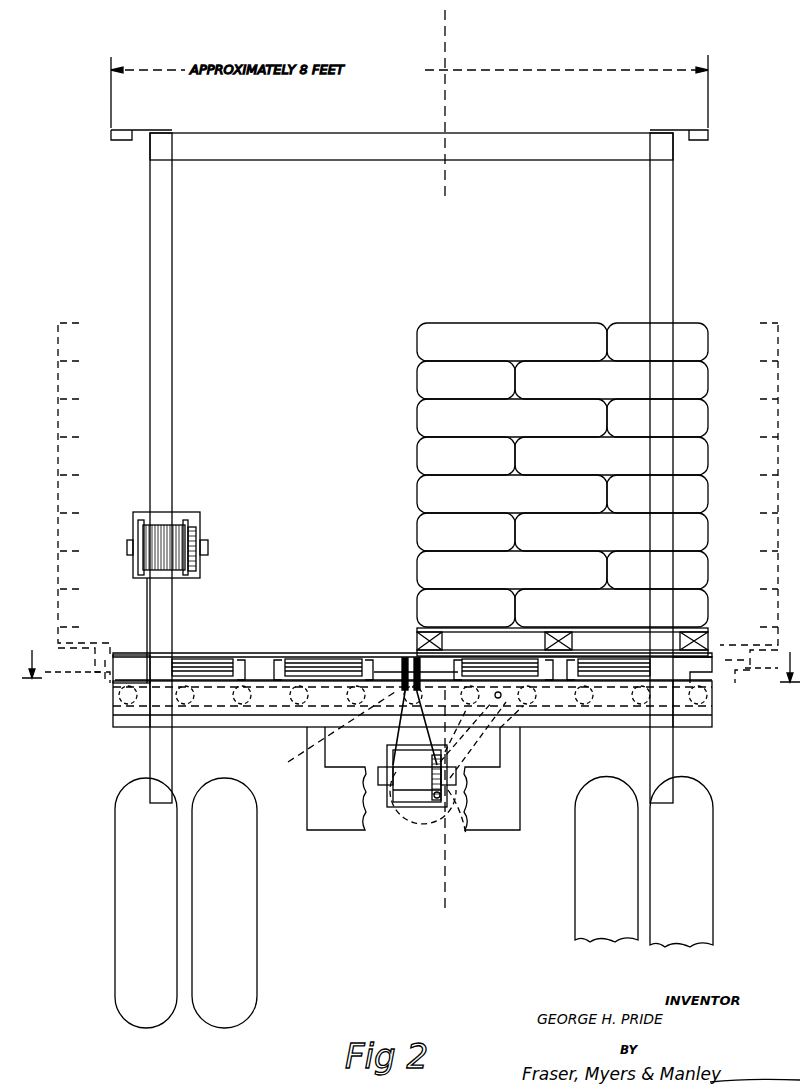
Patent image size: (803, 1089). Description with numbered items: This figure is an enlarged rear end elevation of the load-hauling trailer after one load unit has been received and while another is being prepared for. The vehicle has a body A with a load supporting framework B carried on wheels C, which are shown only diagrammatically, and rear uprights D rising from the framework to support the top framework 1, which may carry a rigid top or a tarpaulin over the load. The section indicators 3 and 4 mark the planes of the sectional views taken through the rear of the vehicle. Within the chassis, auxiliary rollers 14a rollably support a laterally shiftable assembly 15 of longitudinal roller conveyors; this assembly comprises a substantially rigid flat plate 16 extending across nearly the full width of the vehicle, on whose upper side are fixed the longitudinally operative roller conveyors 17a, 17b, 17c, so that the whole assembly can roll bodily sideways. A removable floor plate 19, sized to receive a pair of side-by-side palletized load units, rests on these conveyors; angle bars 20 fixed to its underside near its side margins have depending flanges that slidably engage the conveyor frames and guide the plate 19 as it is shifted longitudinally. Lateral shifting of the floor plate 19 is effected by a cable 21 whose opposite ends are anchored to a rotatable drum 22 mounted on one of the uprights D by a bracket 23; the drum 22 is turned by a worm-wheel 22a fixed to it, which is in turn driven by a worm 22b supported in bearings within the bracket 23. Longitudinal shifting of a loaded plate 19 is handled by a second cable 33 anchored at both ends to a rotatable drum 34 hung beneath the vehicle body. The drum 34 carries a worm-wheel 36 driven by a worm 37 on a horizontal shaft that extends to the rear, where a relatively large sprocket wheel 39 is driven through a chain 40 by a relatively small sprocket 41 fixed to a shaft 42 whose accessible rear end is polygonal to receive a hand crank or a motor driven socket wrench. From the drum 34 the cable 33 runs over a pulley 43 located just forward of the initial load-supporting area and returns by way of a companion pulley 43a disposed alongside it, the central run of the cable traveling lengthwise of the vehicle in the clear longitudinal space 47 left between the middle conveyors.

The top framework 1 is at (338, 137).
The section line 3- 3 is at (447, 905).
The section line 4- 4 is at (411, 657).
The auxiliary rollers 14a is at (243, 702).
The laterally shiftable assembly of longitudinal roller conveyors 15 is at (416, 672).
The flat plate 16 is at (265, 700).
The longitudinally operative roller conveyor 17a is at (200, 668).
The longitudinally operative roller conveyor 17b is at (505, 668).
The longitudinally operative roller conveyor 17c is at (302, 668).
The floor plate 19 is at (372, 672).
The angle bars 20 is at (140, 660).
The cable 21 is at (148, 590).
The rotatable drum 22 is at (150, 545).
The worm-wheel 22a is at (194, 540).
The worm 22b is at (196, 572).
The bracket 23 is at (145, 520).
The cable 33 is at (382, 739).
The rotatable drum 34 is at (401, 808).
The worm-wheel 36 is at (438, 768).
The worm 37 is at (423, 812).
The sprocket wheel 39 is at (467, 820).
The chain 40 is at (470, 792).
The sprocket 41 is at (482, 702).
The shaft 42 is at (502, 698).
The pulley 43 is at (378, 672).
The pulley 43a is at (328, 728).
The clear longitudinal space 47 is at (378, 672).
The body A is at (110, 756).
The load supporting framework B is at (115, 712).
The wheels C is at (128, 887).
The rear uprights D is at (152, 250).